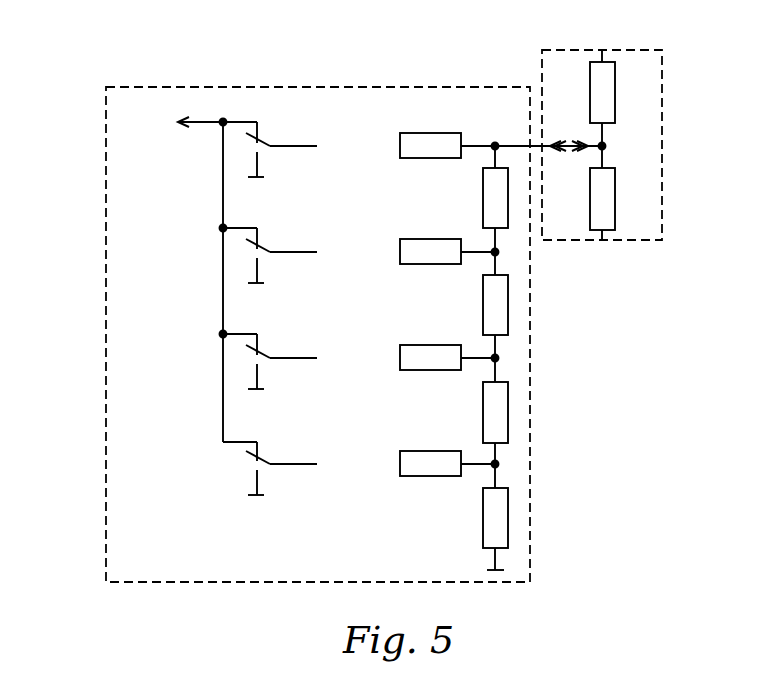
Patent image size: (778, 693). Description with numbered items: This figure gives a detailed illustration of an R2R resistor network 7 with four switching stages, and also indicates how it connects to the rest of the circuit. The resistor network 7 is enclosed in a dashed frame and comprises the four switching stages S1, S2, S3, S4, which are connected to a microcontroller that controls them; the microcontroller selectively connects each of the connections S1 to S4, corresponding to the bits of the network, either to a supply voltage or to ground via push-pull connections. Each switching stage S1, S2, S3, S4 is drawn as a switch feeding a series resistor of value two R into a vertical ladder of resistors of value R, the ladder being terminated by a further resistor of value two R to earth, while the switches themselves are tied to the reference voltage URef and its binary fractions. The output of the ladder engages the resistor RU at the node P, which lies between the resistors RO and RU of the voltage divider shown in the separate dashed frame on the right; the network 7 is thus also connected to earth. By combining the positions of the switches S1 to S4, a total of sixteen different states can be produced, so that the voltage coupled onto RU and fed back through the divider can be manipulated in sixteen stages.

The resistor network 7 is at (103, 167).
The switching stage S1 is at (400, 464).
The switching stage S2 is at (400, 358).
The switching stage S3 is at (400, 252).
The switching stage S4 is at (400, 146).
The resistor RO is at (618, 98).
The resistor RU is at (618, 193).
The node P is at (610, 147).
The reference voltage URef is at (174, 122).